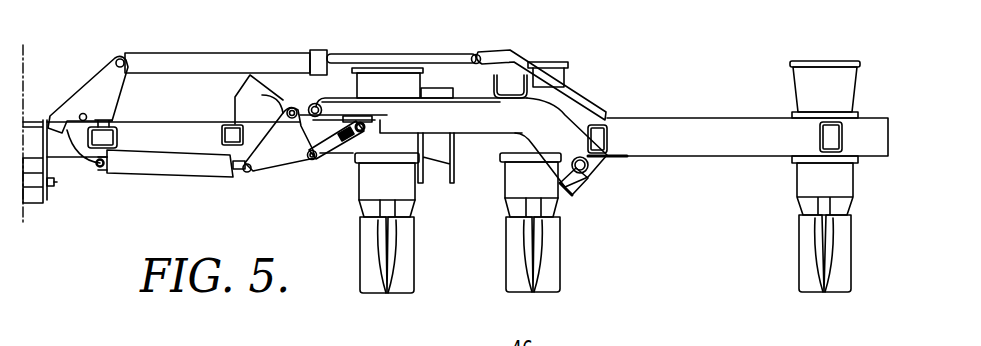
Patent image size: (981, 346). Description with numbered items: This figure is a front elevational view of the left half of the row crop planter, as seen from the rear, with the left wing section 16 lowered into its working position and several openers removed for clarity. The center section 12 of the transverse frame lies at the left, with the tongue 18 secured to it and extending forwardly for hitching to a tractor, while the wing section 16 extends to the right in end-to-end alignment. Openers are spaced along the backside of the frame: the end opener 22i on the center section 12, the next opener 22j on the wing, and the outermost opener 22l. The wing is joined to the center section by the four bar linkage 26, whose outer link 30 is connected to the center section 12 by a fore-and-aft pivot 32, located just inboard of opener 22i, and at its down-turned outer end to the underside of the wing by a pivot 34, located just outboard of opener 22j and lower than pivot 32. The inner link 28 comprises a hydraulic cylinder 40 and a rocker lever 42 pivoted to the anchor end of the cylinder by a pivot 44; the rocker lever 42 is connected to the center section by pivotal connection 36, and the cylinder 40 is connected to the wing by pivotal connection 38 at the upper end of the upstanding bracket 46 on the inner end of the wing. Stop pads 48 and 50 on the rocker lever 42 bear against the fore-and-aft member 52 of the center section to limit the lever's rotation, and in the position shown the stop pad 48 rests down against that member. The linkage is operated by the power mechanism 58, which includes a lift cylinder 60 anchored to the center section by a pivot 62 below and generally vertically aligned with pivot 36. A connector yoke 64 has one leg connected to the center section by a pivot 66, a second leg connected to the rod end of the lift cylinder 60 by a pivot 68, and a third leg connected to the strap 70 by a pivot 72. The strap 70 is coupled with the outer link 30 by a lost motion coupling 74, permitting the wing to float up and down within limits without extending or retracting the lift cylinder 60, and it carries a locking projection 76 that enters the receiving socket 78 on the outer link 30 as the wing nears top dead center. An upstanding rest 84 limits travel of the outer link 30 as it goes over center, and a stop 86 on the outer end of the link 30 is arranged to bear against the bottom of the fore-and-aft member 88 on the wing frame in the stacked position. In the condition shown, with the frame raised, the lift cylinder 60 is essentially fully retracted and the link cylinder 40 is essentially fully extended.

The center section 12 is at (385, 150).
The wing section 16 is at (780, 130).
The tongue 18 is at (33, 205).
The opener 22i is at (372, 298).
The opener 22j is at (518, 275).
The opener 22l is at (803, 250).
The four bar linkage 26 is at (467, 142).
The inner link 28 is at (204, 54).
The outer link 30 is at (537, 118).
The pivot 32 is at (315, 103).
The pivot 34 is at (589, 167).
The pivotal connection 36 is at (80, 115).
The pivotal connection 38 is at (479, 55).
The hydraulic cylinder 40 is at (207, 70).
The rocker lever 42 is at (97, 88).
The pivot 44 is at (118, 60).
The bracket 46 is at (510, 62).
The stop pad 48 is at (106, 118).
The stop pad 50 is at (77, 159).
The fore-and-aft member 52 is at (118, 140).
The power mechanism 58 is at (180, 182).
The lift cylinder 60 is at (218, 172).
The pivot 62 is at (100, 168).
The connector yoke 64 is at (273, 158).
The pivot 66 is at (291, 106).
The pivot 68 is at (250, 178).
The strap 70 is at (337, 150).
The pivot 72 is at (313, 163).
The lost motion coupling 74 is at (376, 121).
The locking projection 76 is at (296, 160).
The receiving socket 78 is at (356, 124).
The rest 84 is at (272, 76).
The stop 86 is at (576, 192).
The fore-and-aft member 88 is at (608, 140).